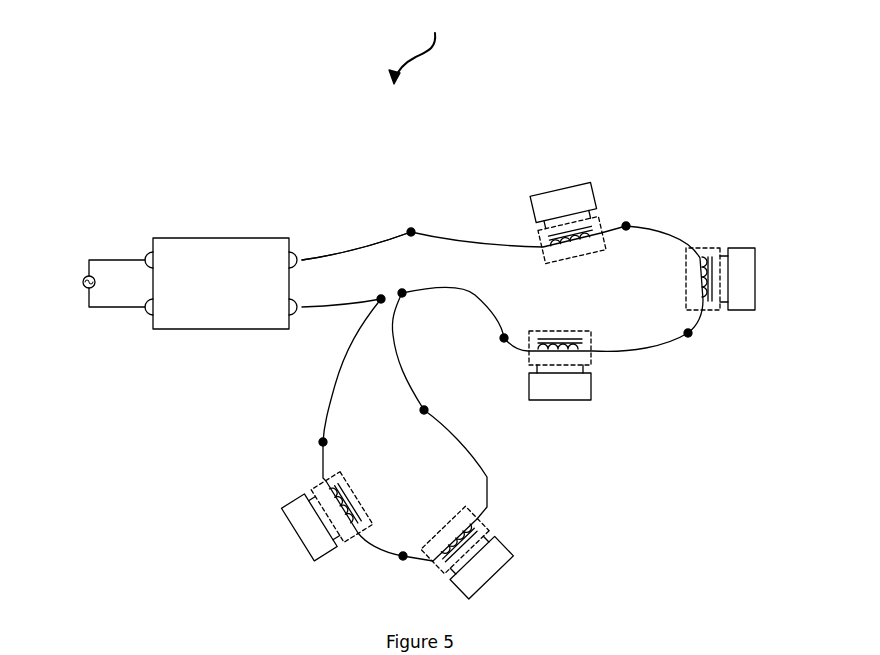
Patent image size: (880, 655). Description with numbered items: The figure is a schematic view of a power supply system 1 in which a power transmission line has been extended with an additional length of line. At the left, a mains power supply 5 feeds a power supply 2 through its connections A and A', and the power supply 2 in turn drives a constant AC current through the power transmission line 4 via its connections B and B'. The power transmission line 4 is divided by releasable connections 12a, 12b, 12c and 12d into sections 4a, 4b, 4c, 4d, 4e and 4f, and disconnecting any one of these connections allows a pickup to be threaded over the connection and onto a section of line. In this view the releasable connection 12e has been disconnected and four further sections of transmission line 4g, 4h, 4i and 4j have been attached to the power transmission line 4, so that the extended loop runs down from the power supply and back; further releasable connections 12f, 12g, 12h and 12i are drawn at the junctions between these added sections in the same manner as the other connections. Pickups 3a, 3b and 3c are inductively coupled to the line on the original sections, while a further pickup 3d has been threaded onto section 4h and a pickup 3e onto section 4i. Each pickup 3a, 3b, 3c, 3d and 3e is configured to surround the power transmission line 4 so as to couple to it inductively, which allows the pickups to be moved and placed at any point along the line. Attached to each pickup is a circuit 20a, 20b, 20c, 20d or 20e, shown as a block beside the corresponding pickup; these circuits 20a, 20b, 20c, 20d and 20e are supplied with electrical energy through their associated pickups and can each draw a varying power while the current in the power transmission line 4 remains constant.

The power supply system 1 is at (415, 45).
The power supply 2 is at (227, 270).
The pickup 3a is at (598, 228).
The pickup 3b is at (718, 250).
The pickup 3c is at (593, 365).
The pickup 3d is at (488, 532).
The pickup 3e is at (342, 538).
The power transmission line 4 is at (381, 238).
The section of power transmission line 4a is at (341, 250).
The section of power transmission line 4b is at (478, 240).
The section of power transmission line 4c is at (672, 236).
The section of power transmission line 4d is at (655, 347).
The section of power transmission line 4e is at (465, 292).
The section of power transmission line 4f is at (318, 309).
The section of transmission line 4g is at (403, 381).
The section of transmission line 4h is at (490, 490).
The section of transmission line 4i is at (372, 550).
The section of transmission line 4j is at (321, 420).
The mains power supply 5 is at (84, 287).
The releasable connection 12a is at (411, 232).
The releasable connection 12b is at (630, 226).
The releasable connection 12c is at (693, 335).
The releasable connection 12d is at (500, 348).
The releasable connection 12e is at (402, 293).
The node 12f is at (429, 411).
The node 12g is at (403, 560).
The node 12h is at (328, 442).
The node 12i is at (381, 299).
The circuit 20a is at (560, 203).
The circuit 20b is at (748, 270).
The circuit 20c is at (563, 388).
The circuit 20d is at (493, 572).
The circuit 20e is at (305, 520).